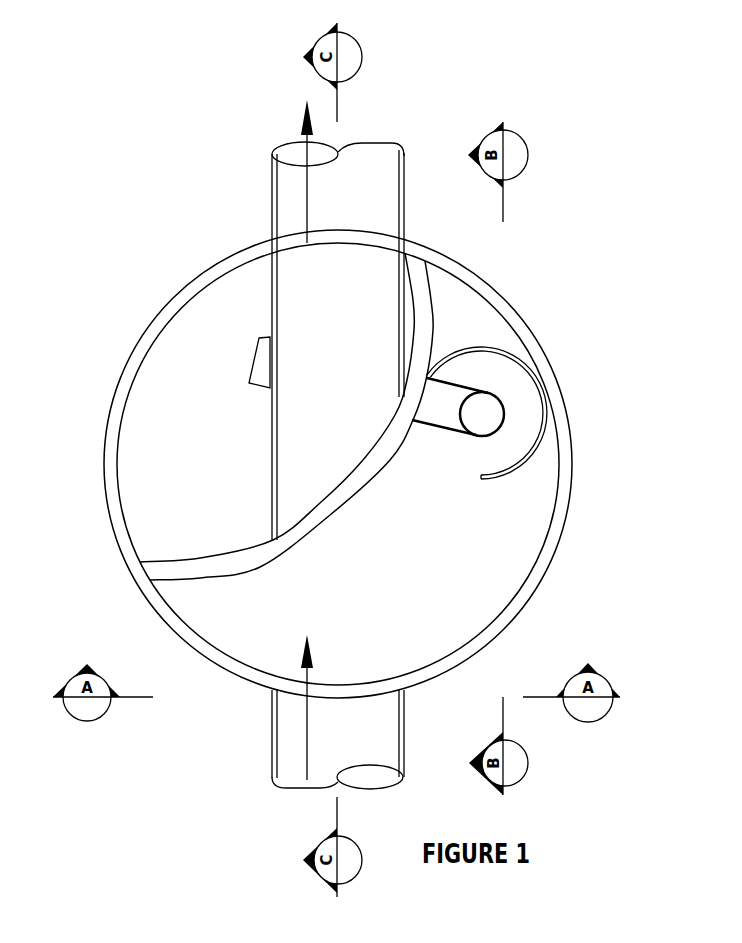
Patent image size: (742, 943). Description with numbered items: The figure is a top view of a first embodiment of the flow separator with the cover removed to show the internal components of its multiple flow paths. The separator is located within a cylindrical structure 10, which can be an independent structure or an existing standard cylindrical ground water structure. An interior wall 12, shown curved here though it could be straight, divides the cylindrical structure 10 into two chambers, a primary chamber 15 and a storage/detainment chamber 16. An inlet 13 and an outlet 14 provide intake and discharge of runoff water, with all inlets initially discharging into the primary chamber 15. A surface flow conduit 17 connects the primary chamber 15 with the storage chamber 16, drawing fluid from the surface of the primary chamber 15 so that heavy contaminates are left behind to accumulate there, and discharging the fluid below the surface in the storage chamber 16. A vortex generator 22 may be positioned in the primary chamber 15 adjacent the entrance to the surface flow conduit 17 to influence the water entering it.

The cylindrical structure 10 is at (600, 485).
The interior wall 12 is at (202, 572).
The inlet 13 is at (265, 736).
The outlet 14 is at (263, 198).
The primary chamber 15 is at (413, 590).
The storage/detainment chamber 16 is at (186, 442).
The surface flow conduit 17 is at (447, 415).
The vortex generator 22 is at (522, 472).